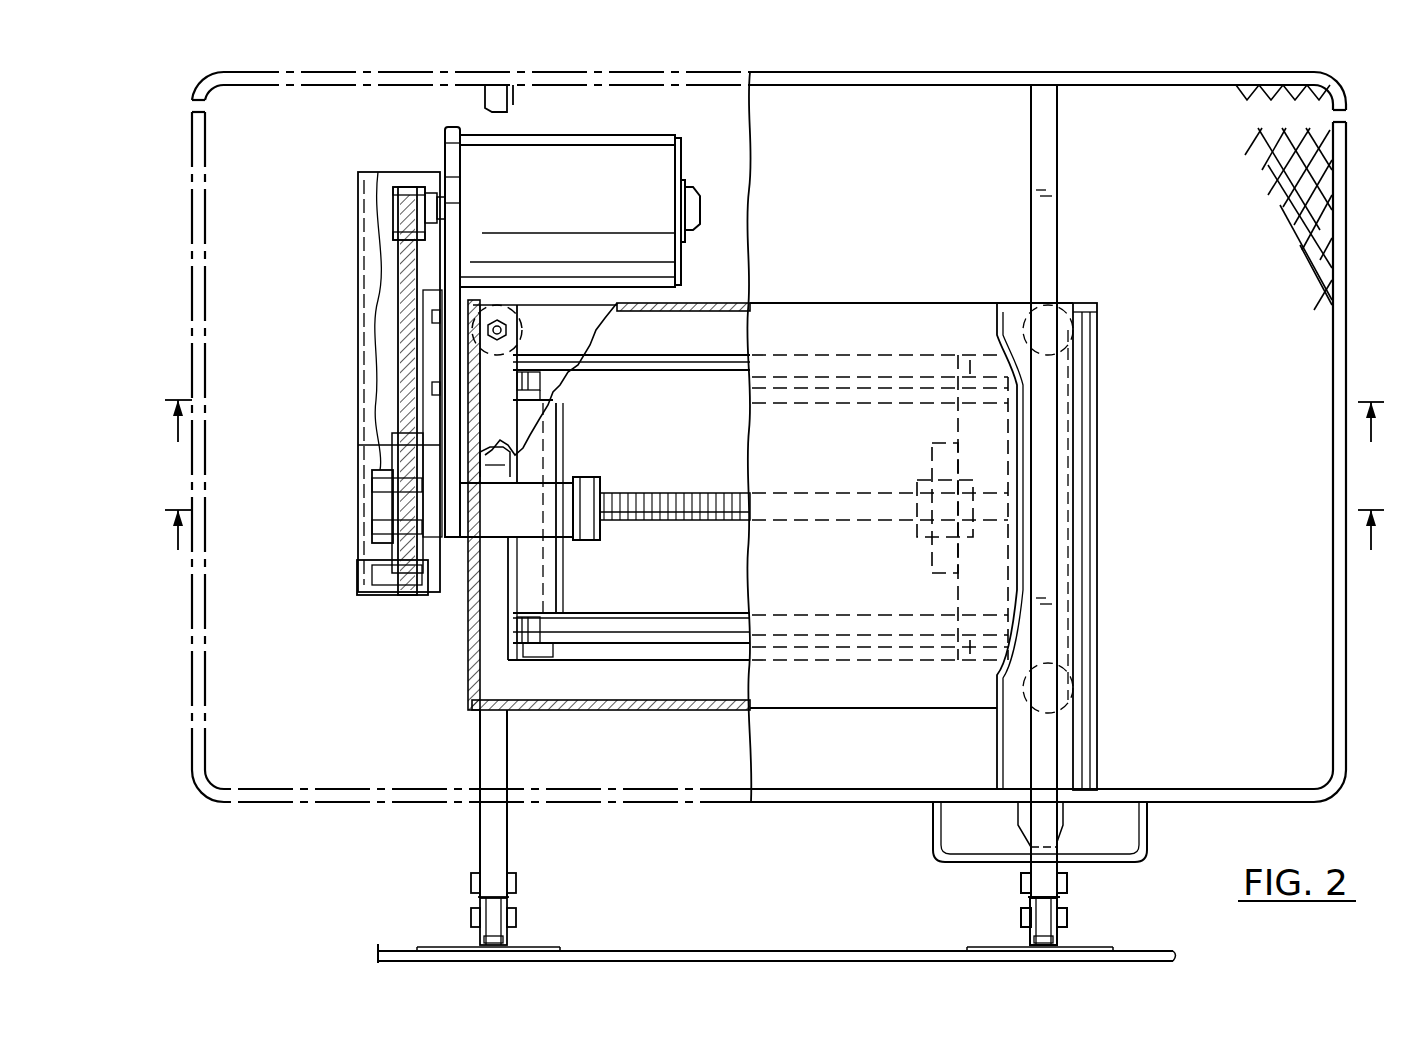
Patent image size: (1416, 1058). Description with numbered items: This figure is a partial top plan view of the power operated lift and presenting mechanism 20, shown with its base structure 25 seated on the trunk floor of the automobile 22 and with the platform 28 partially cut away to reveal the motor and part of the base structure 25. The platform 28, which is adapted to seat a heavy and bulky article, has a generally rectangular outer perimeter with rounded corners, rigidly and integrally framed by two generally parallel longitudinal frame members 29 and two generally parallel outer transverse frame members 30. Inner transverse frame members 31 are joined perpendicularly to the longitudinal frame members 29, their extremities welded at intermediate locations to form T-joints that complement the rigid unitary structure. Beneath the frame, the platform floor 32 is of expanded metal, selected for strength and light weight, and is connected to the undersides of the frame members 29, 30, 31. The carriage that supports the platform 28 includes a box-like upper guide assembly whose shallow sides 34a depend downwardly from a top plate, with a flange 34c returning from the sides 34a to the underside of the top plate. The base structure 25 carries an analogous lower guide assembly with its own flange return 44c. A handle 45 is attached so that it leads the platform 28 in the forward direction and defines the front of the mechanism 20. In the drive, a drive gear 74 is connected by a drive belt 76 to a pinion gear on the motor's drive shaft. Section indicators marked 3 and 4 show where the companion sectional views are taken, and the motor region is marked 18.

The motor 18 is at (600, 156).
The power operated lift and presenting mechanism 20 is at (312, 854).
The automobile 22 is at (636, 948).
The base structure 25 is at (690, 438).
The platform 28 is at (188, 804).
The longitudinal frame members 29 is at (820, 84).
The outer transverse frame members 30 is at (192, 626).
The inner transverse frame members 31 is at (1048, 264).
The platform floor 32 is at (1250, 201).
The shallow sides 34a is at (470, 641).
The flange 34c is at (730, 316).
The flange return 44c is at (553, 335).
The handle 45 is at (938, 850).
The drive gear 74 is at (385, 560).
The drive belt 76 is at (392, 600).
The section line 3 is at (768, 421).
The section line 4 is at (770, 530).